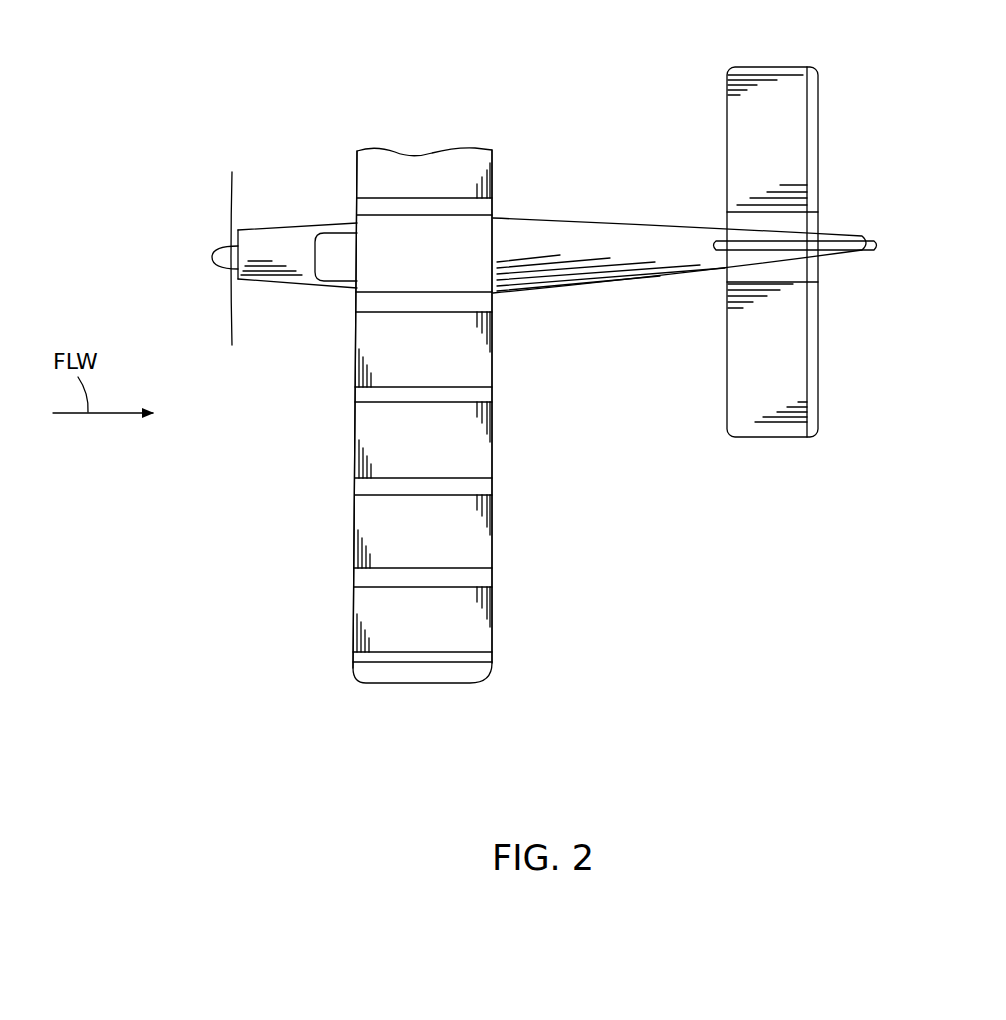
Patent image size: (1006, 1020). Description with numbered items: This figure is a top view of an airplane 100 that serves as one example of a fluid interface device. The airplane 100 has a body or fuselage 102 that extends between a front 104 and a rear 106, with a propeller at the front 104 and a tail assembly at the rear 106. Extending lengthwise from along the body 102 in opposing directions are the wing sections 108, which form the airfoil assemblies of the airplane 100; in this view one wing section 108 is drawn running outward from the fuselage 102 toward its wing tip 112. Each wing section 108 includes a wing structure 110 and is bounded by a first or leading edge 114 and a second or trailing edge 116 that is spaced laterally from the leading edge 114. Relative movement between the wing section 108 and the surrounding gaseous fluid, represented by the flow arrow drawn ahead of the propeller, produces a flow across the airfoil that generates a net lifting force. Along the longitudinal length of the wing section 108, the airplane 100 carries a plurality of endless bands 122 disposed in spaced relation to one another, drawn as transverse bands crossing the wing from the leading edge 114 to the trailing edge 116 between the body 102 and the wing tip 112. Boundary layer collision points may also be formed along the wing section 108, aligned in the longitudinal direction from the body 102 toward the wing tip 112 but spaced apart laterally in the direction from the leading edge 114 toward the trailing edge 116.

The airplane 100 is at (546, 417).
The fuselage 102 is at (592, 211).
The front 104 is at (259, 184).
The rear 106 is at (873, 195).
The wing section 108 is at (429, 417).
The wing structure 110 is at (396, 584).
The wing tip 112 is at (348, 682).
The leading edge 114 is at (356, 393).
The trailing edge 116 is at (492, 485).
The endless band 122 is at (405, 156).